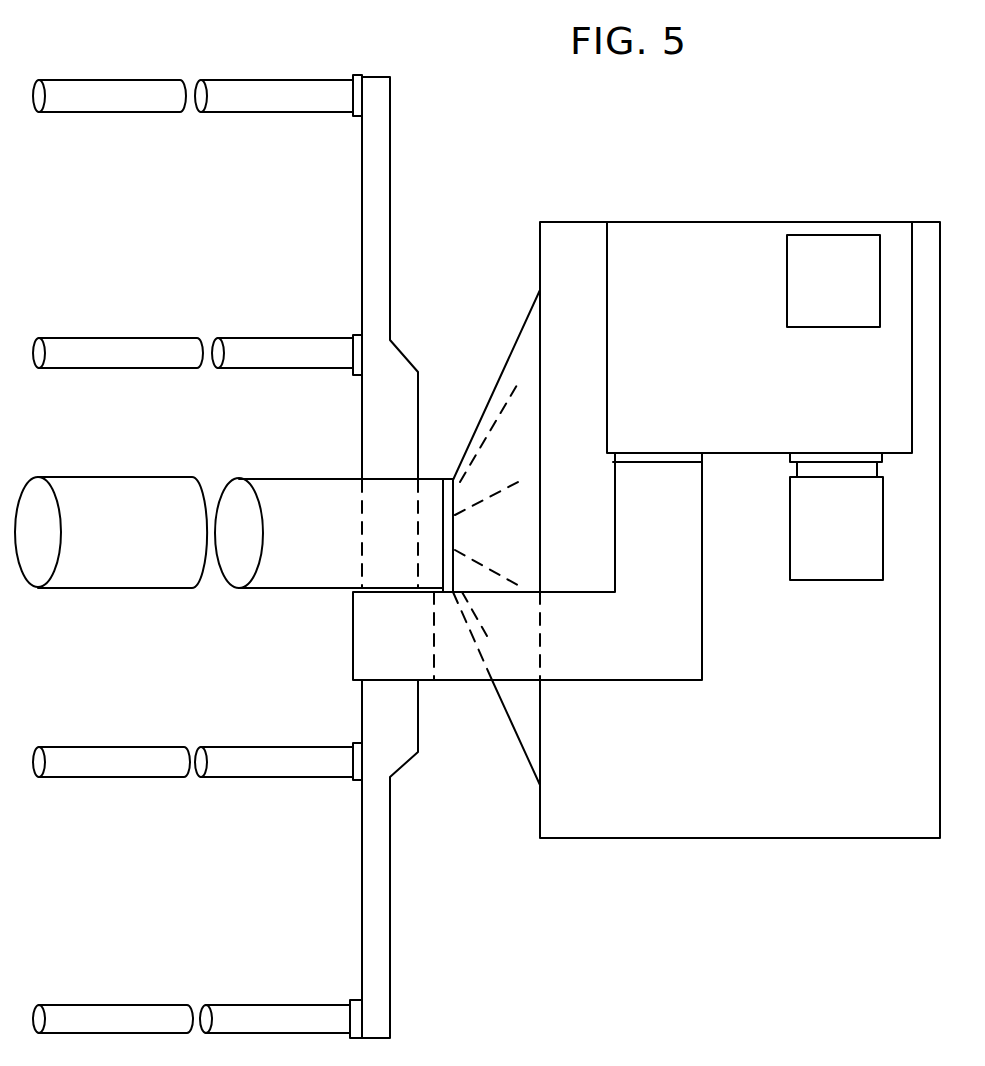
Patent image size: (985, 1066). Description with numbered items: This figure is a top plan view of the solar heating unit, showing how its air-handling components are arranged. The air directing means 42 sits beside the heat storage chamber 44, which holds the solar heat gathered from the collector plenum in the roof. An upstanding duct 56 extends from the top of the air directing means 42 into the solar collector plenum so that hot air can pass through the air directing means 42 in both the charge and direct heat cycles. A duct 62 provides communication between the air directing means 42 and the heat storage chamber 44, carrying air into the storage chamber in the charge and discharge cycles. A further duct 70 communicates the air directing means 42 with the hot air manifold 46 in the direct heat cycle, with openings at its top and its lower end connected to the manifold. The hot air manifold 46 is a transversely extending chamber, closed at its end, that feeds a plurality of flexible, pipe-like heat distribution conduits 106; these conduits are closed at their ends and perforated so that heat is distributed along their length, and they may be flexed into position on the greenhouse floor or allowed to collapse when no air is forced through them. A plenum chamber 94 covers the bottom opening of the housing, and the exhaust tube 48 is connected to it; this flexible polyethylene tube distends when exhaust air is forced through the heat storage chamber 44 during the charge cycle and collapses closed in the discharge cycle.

The air directing means 42 is at (675, 240).
The heat storage chamber 44 is at (728, 838).
The hot air manifold 46 is at (392, 962).
The exhaust tube 48 is at (125, 477).
The upstanding duct 56 is at (830, 233).
The duct 62 is at (787, 298).
The duct 70 is at (673, 682).
The plenum chamber 94 is at (517, 742).
The heat distribution conduits 106 is at (122, 745).